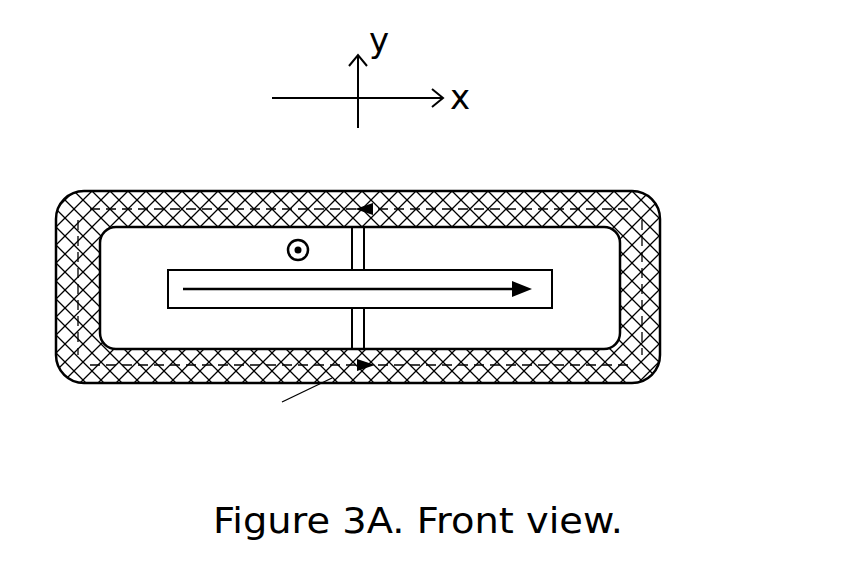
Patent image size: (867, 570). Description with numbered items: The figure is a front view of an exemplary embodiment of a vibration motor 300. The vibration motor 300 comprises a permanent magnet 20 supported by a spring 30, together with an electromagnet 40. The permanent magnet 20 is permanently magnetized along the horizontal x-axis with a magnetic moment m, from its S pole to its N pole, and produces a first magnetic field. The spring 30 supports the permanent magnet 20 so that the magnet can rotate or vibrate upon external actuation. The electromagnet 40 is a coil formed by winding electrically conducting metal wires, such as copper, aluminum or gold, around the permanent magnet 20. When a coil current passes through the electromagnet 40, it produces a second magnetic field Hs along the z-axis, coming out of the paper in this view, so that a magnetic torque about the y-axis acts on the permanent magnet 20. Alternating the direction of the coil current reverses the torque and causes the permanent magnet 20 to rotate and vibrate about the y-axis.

The vibration motor 300 is at (560, 108).
The electromagnet 40 is at (203, 192).
The permanent magnet 20 is at (442, 282).
The spring 30 is at (357, 322).